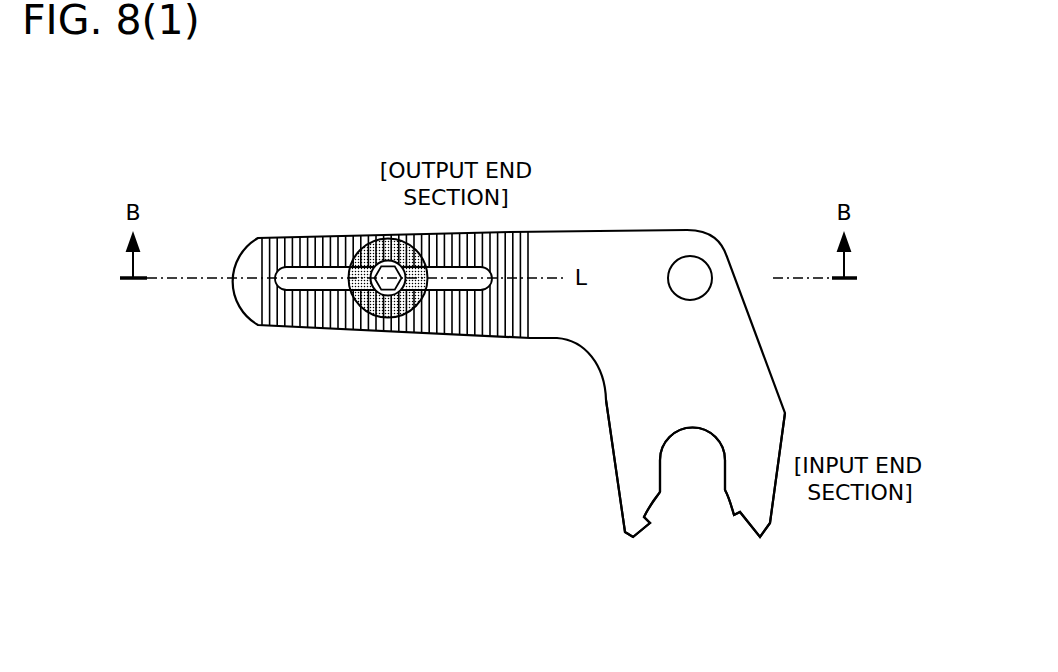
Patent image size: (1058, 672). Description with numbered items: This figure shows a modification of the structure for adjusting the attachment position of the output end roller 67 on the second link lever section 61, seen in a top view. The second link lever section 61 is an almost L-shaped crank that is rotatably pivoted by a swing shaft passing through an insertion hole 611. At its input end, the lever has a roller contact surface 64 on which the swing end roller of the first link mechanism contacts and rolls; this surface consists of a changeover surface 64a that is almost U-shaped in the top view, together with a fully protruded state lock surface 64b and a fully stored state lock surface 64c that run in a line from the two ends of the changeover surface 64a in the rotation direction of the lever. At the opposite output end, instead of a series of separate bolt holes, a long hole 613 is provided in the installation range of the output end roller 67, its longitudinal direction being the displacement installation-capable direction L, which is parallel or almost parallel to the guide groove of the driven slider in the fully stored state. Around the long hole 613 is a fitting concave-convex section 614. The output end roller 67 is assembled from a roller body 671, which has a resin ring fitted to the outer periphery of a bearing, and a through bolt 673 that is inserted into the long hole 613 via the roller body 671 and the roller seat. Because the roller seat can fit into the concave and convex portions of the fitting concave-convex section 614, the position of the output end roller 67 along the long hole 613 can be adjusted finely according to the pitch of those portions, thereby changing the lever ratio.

The second link lever section 61 is at (591, 230).
The insertion hole 611 is at (700, 264).
The long hole 613 is at (308, 279).
The fitting concave-convex section 614 is at (522, 228).
The roller contact surface 64 is at (694, 532).
The changeover surface 64a is at (678, 436).
The fully protruded state lock surface 64b is at (650, 524).
The fully stored state lock surface 64c is at (761, 514).
The output end roller 67 is at (372, 340).
The roller body 671 is at (366, 306).
The through bolt 673 is at (404, 324).